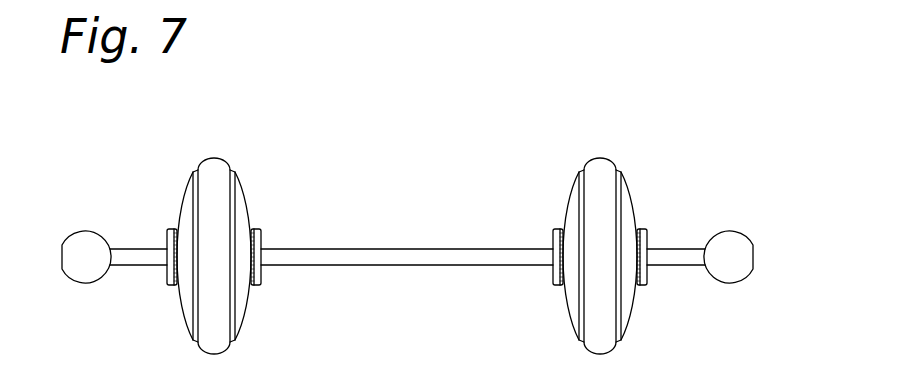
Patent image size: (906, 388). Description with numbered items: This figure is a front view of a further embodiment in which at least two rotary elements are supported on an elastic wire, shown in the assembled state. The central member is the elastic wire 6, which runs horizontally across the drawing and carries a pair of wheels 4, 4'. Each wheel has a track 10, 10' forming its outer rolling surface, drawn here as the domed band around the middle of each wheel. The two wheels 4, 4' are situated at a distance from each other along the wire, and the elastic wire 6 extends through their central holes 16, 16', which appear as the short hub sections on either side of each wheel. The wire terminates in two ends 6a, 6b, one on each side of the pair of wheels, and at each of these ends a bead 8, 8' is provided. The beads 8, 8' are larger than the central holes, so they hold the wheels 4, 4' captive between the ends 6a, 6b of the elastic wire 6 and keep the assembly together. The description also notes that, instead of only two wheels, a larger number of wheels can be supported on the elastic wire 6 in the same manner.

The wheel 4 is at (231, 228).
The wheel 4' is at (583, 227).
The track 10 is at (220, 222).
The track 10' is at (596, 221).
The central hole 16 is at (241, 249).
The central hole 16' is at (623, 239).
The elastic wire 6 is at (397, 257).
The end of the elastic wire 6a is at (142, 260).
The end of the elastic wire 6b is at (673, 255).
The bead 8 is at (86, 236).
The bead 8' is at (729, 238).